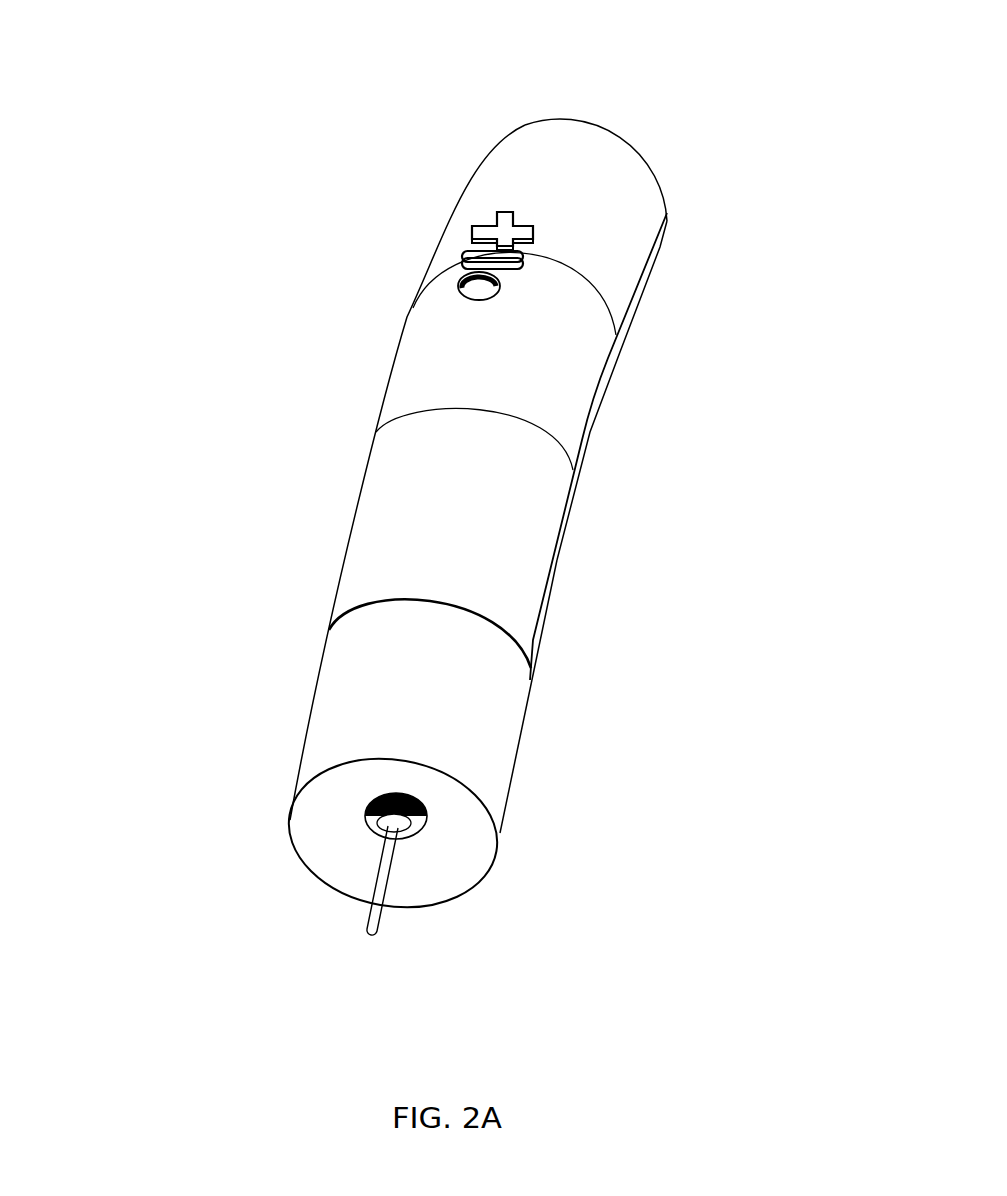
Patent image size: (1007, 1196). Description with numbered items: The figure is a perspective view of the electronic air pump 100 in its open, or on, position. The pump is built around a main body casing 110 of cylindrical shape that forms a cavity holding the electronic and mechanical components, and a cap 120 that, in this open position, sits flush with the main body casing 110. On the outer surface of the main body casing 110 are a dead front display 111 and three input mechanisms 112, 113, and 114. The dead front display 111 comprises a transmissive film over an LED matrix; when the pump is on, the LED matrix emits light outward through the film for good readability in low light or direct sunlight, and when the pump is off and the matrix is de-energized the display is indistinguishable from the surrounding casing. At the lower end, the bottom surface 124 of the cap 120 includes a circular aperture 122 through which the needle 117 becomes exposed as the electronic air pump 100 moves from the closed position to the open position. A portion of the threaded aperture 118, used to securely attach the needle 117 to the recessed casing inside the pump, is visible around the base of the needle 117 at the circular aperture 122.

The electronic air pump 100 is at (130, 78).
The main body casing 110 is at (377, 421).
The dead front display 111 is at (531, 175).
The input mechanism 112 is at (524, 205).
The input mechanism 113 is at (526, 250).
The input mechanism 114 is at (506, 288).
The needle 117 is at (369, 929).
The threaded aperture 118 is at (414, 809).
The cap 120 is at (526, 745).
The circular aperture 122 is at (366, 801).
The bottom surface 124 is at (477, 857).